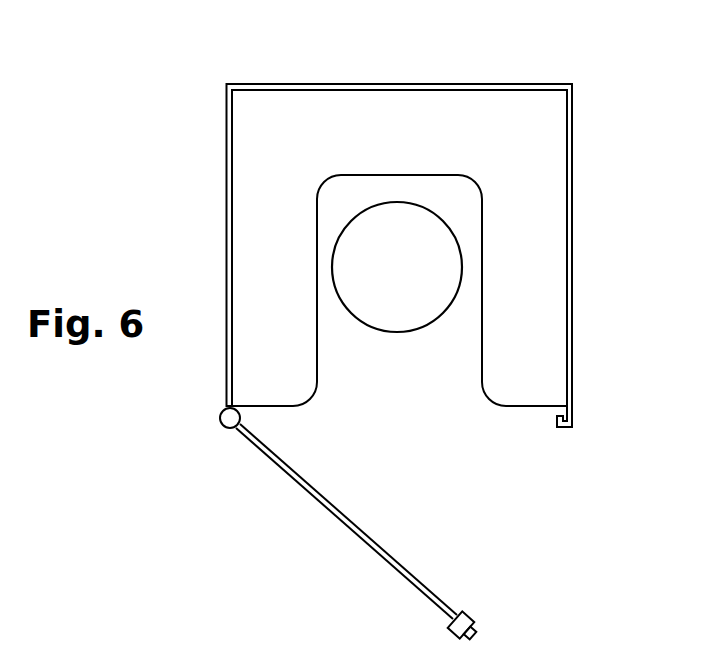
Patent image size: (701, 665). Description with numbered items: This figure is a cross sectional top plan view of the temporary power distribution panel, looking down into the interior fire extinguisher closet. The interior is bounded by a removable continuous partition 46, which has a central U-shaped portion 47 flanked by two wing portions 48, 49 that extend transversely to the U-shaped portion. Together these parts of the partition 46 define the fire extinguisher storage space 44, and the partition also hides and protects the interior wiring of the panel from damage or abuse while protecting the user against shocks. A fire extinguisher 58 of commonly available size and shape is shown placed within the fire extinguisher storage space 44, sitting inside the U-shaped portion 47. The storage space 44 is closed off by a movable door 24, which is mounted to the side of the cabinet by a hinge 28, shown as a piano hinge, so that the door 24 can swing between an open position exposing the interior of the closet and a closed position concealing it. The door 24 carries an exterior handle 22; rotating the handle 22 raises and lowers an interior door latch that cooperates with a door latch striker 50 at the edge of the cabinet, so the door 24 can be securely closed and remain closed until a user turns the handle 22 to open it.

The removable continuous partition 46 is at (341, 67).
The central U-shaped portion 47 is at (392, 138).
The wing portion 48 is at (557, 205).
The wing portion 49 is at (253, 253).
The door latch striker 50 is at (560, 412).
The fire extinguisher 58 is at (365, 312).
The fire extinguisher storage space 44 is at (420, 348).
The hinge 28 is at (228, 417).
The movable door 24 is at (287, 477).
The handle 22 is at (448, 631).